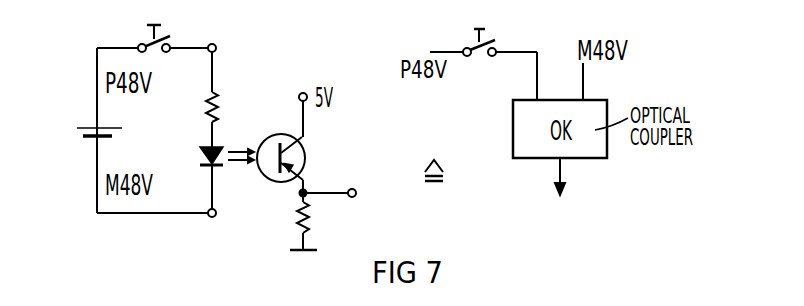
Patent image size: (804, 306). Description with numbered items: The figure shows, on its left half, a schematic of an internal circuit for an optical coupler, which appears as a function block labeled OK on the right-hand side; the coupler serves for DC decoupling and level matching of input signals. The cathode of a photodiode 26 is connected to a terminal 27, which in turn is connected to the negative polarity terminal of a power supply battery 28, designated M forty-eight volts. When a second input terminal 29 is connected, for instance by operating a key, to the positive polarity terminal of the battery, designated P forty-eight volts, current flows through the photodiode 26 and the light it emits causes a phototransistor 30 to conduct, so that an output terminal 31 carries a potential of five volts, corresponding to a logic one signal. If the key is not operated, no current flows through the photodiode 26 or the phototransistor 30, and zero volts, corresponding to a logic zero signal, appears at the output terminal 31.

The photodiode 26 is at (200, 155).
The terminal 27 is at (215, 230).
The power supply battery 28 is at (81, 131).
The second input terminal 29 is at (215, 33).
The phototransistor 30 is at (291, 135).
The output terminal 31 is at (356, 208).